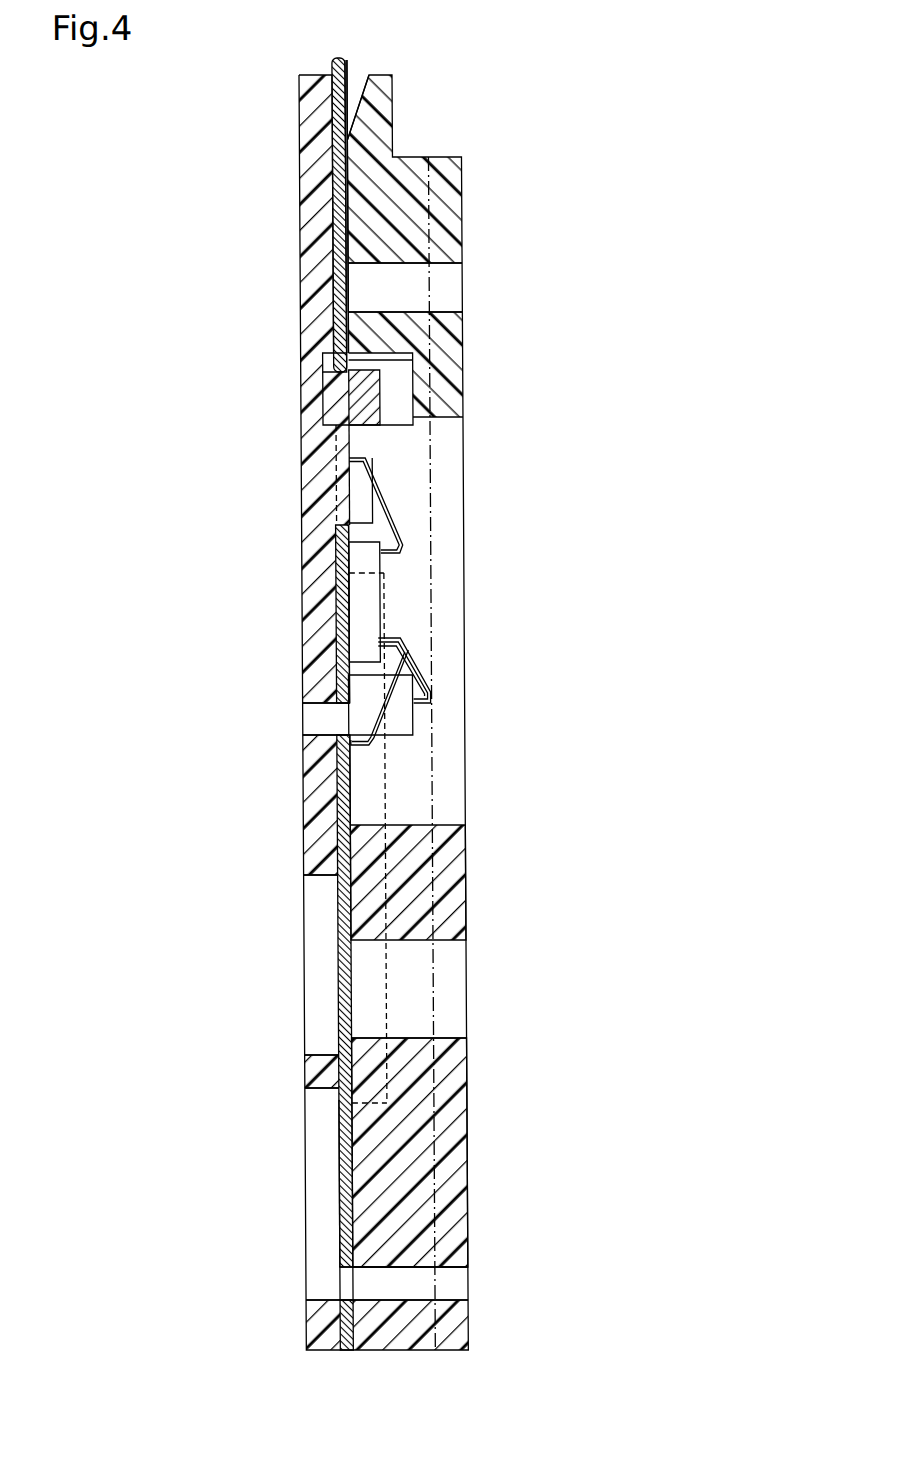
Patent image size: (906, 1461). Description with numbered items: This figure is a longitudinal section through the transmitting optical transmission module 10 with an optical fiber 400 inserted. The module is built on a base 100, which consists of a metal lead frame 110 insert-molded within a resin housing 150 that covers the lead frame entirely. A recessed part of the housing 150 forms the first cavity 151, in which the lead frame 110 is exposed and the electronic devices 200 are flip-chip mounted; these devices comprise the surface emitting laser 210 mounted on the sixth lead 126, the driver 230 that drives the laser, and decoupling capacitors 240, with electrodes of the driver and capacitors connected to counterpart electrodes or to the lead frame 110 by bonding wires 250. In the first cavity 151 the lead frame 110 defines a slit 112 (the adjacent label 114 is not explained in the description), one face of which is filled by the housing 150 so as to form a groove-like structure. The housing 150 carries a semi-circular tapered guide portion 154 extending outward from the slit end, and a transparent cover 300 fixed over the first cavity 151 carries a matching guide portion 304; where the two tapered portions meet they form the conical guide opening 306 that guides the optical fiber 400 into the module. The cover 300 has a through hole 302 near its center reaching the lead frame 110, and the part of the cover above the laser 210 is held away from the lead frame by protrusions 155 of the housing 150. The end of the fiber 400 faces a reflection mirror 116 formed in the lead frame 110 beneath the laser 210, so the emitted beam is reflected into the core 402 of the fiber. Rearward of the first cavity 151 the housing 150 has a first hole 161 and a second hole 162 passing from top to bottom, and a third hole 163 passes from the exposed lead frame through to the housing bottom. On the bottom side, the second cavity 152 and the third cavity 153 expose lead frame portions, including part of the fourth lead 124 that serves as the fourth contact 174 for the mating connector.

The transmitting optical transmission module 10 is at (155, 182).
The base 100 is at (183, 592).
The lead frame 110 is at (339, 618).
The slit 112 is at (350, 190).
The conductive film 114 is at (347, 206).
The reflection mirror 116 is at (341, 368).
The fourth lead 124 is at (280, 1228).
The sixth lead 126 is at (343, 405).
The housing 150 is at (301, 668).
The first cavity 151 is at (443, 556).
The second cavity 152 is at (323, 980).
The third cavity 153 is at (323, 1170).
The guide portion 154 is at (305, 116).
The protrusions 155 is at (403, 372).
The first hole 161 is at (443, 990).
The second hole 162 is at (445, 1283).
The third hole 163 is at (320, 721).
The fourth contact 174 is at (337, 1212).
The electronic devices 200 is at (479, 733).
The surface emitting laser (VCSEL) 210 is at (380, 392).
The driver 230 is at (365, 605).
The decoupling capacitors 240 is at (400, 726).
The wires 250 is at (387, 502).
The cover 300 is at (462, 170).
The through hole 302 is at (440, 287).
The guide portion 304 is at (388, 106).
The conical guide opening 306 is at (355, 95).
The optical fiber 400 is at (333, 62).
The core 402 is at (334, 203).